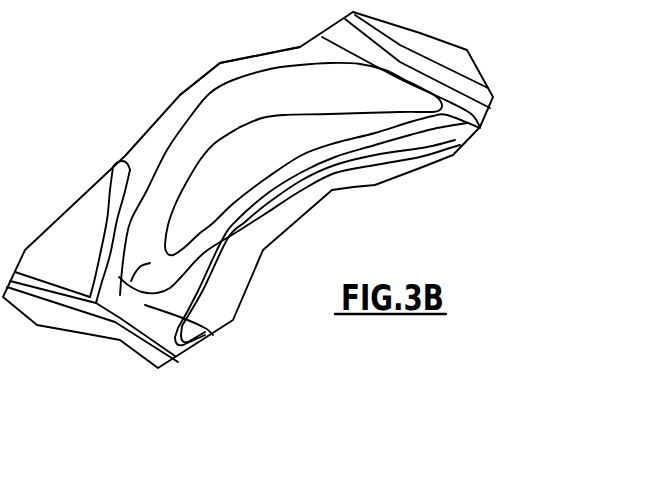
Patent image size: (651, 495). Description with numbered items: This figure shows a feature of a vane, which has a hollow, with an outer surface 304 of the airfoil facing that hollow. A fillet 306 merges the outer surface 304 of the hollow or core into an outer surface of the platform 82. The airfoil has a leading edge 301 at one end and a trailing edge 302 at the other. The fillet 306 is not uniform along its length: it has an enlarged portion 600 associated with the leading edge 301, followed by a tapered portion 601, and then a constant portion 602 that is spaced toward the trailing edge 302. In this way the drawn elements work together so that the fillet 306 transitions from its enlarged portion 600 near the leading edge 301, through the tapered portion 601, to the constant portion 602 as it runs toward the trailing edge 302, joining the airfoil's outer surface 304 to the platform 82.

The leading edge 301 is at (120, 295).
The trailing edge 302 is at (443, 107).
The outer surface 304 is at (287, 140).
The fillet 306 is at (217, 110).
The tapered portion 601 is at (215, 233).
The constant portion 602 is at (377, 138).
The enlarged portion 600 is at (167, 275).
The platform 82 is at (213, 335).